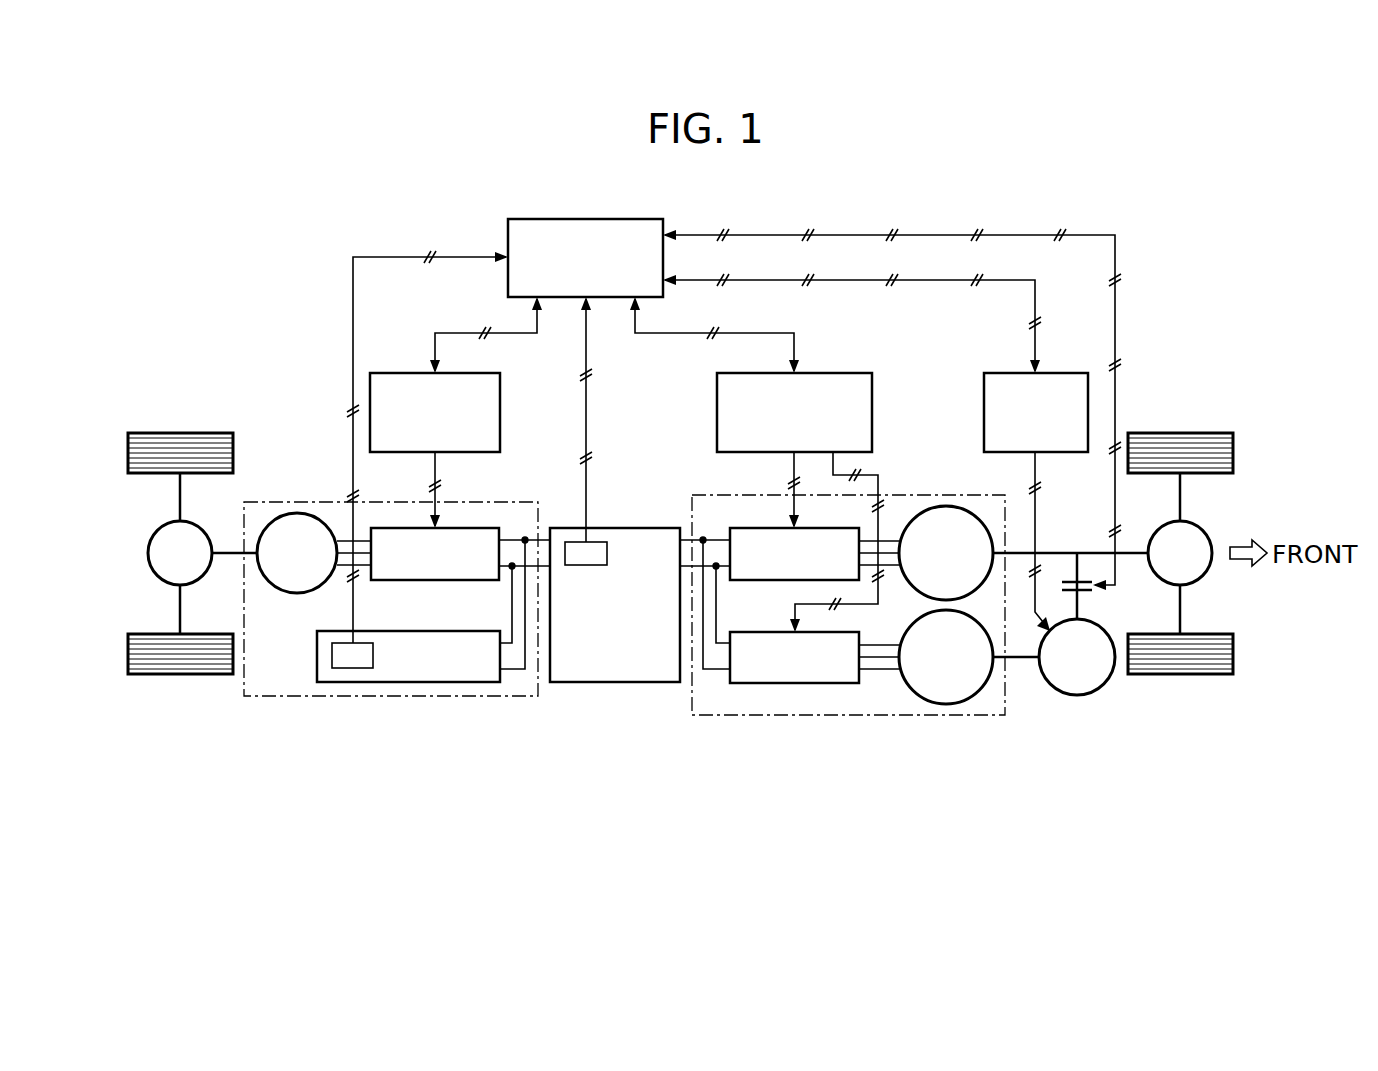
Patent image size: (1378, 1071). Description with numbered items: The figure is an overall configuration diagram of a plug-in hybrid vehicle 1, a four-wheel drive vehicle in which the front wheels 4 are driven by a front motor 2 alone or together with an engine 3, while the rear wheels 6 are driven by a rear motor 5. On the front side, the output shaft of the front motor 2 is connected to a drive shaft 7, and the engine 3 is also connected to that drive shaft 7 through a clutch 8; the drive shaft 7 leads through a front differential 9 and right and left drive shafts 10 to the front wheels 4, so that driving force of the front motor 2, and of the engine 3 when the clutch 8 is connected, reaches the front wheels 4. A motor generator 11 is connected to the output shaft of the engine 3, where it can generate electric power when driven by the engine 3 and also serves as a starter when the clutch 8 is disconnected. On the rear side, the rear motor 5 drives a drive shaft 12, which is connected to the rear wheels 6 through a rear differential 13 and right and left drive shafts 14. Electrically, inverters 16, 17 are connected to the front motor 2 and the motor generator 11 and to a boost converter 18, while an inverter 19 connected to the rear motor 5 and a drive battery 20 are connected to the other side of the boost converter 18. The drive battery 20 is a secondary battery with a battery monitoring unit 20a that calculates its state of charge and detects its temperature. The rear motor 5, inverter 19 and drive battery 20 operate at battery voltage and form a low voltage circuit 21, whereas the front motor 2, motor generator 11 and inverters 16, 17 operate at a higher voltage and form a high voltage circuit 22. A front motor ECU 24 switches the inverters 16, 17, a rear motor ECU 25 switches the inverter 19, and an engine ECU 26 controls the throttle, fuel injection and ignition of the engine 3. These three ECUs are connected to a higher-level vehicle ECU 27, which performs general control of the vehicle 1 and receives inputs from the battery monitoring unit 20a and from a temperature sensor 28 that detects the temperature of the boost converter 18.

The vehicle 1 is at (1106, 200).
The front motor 2 is at (947, 506).
The engine 3 is at (1077, 697).
The front wheels 4 is at (1211, 432).
The rear motor 5 is at (281, 592).
The rear wheels 6 is at (141, 432).
The drive shaft 7 is at (1136, 553).
The clutch 8 is at (1086, 592).
The front differential 9 is at (1205, 536).
The right and left drive shafts 10 is at (1182, 497).
The motor generator 11 is at (931, 704).
The drive shaft 12 is at (227, 553).
The rear differential 13 is at (148, 548).
The right and left drive shafts 14 is at (178, 496).
The inverter 16 is at (763, 527).
The inverter 17 is at (763, 631).
The boost converter 18 is at (656, 528).
The inverter 19 is at (394, 582).
The drive battery 20 is at (477, 631).
The battery monitoring unit 20a is at (336, 643).
The low voltage circuit 21 is at (282, 698).
The high voltage circuit 22 is at (729, 717).
The front motor ECU 24 is at (849, 372).
The rear motor ECU 25 is at (392, 372).
The engine ECU 26 is at (1001, 372).
The vehicle ECU 27 is at (537, 218).
The temperature sensor 28 is at (597, 542).